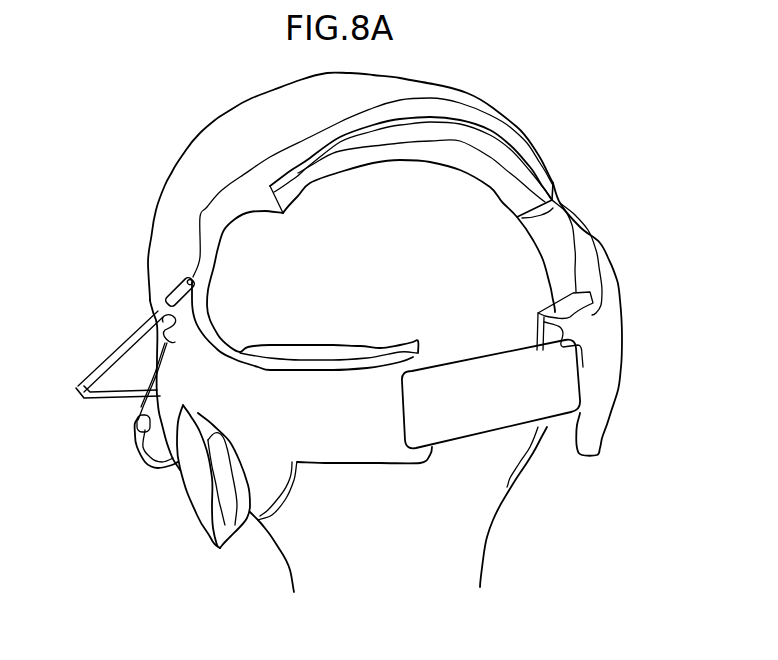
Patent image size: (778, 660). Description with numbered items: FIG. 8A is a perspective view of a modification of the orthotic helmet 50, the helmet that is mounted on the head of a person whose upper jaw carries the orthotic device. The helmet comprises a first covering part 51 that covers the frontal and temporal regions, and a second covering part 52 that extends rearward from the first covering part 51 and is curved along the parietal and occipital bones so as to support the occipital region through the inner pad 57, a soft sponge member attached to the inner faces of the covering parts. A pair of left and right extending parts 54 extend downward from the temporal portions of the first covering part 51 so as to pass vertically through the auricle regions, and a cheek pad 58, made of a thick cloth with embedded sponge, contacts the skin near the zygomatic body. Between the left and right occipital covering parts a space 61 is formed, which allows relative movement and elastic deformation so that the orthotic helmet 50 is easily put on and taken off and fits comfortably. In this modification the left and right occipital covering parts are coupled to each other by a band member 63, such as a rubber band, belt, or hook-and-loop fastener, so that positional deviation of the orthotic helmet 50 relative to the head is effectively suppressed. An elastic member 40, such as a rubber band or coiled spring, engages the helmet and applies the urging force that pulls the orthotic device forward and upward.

The orthotic helmet 50 is at (153, 162).
The first covering part 51 is at (277, 145).
The second covering part 52 is at (330, 396).
The extending part 54 is at (174, 440).
The inner pad 57 is at (555, 208).
The cheek pad 58 is at (247, 527).
The space 61 is at (465, 456).
The band member 63 is at (512, 411).
The elastic member 40 is at (147, 402).